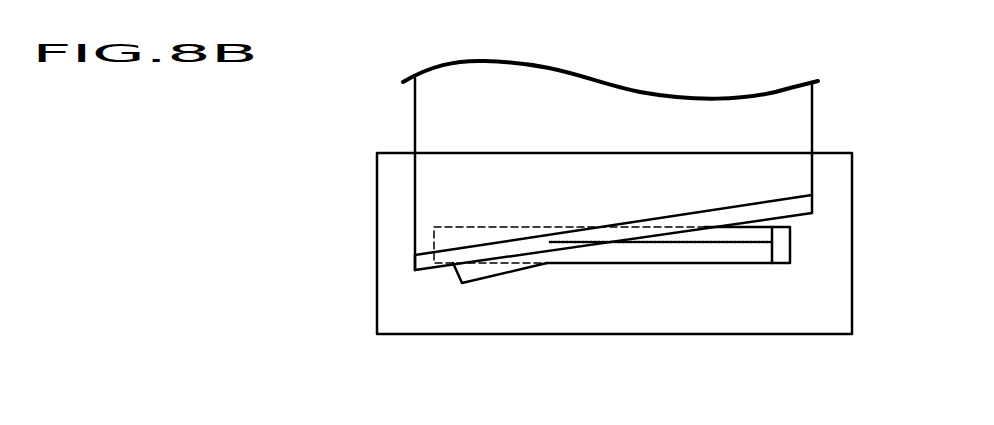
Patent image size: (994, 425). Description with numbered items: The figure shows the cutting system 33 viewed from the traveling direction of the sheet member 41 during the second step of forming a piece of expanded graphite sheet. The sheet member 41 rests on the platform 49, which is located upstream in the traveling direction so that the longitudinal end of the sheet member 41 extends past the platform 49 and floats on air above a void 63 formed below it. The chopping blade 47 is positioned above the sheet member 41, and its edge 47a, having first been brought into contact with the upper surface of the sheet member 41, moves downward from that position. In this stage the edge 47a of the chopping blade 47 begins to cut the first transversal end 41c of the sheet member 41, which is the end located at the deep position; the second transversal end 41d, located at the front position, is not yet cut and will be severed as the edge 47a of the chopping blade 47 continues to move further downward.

The cutting system 33 is at (370, 125).
The chopping blade 47 is at (812, 126).
The edge 47a is at (414, 271).
The sheet member 41 is at (776, 240).
The first transversal end 41c is at (462, 286).
The second transversal end 41d is at (717, 264).
The platform 49 is at (802, 335).
The void 63 is at (611, 315).